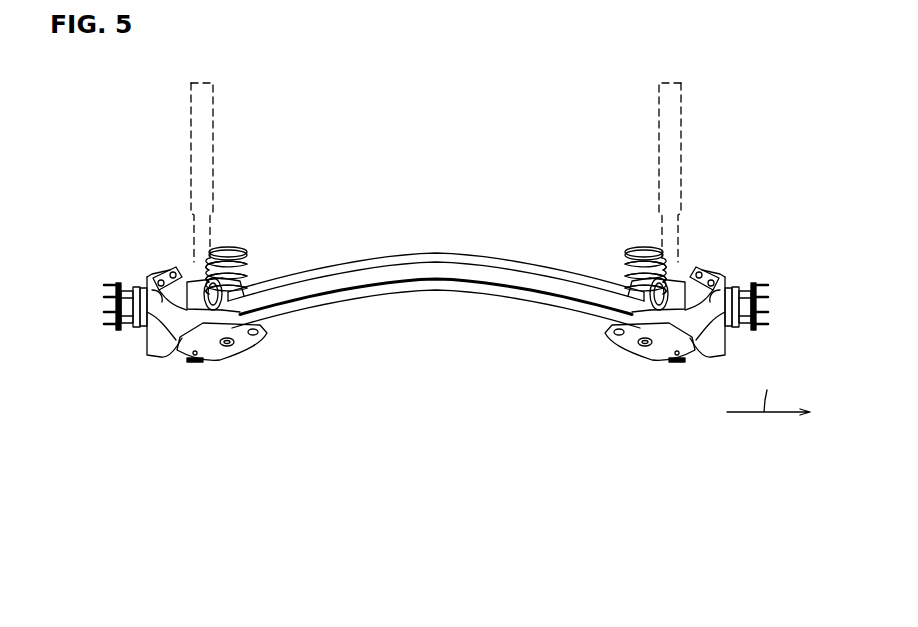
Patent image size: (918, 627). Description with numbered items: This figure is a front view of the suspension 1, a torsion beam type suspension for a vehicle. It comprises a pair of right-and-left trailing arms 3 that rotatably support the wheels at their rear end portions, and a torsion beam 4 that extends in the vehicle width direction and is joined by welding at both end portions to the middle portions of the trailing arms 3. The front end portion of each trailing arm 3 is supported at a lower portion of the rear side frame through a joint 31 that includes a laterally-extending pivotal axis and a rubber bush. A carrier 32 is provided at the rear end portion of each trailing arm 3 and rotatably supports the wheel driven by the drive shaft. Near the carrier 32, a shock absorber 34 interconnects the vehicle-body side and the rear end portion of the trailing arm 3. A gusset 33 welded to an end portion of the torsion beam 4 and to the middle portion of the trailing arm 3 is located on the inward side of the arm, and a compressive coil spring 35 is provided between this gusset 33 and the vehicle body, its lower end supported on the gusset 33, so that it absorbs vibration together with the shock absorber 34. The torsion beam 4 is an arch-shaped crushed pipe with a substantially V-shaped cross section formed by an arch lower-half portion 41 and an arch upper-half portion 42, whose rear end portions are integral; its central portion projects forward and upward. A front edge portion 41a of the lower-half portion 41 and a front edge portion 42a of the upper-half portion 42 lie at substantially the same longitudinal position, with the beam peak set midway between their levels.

The suspension 1 is at (600, 82).
The trailing arm 3 is at (122, 350).
The torsion beam 4 is at (303, 318).
The joint 31 is at (197, 285).
The carrier 32 is at (104, 297).
The gusset 33 is at (213, 357).
The shock absorber 34 is at (214, 128).
The compressive coil spring 35 is at (230, 248).
The arch lower-half portion 41 is at (518, 291).
The front edge portion of the arch lower-half portion 41a is at (414, 286).
The arch upper-half portion 42 is at (528, 261).
The front edge portion of the arch upper-half portion 42a is at (419, 255).